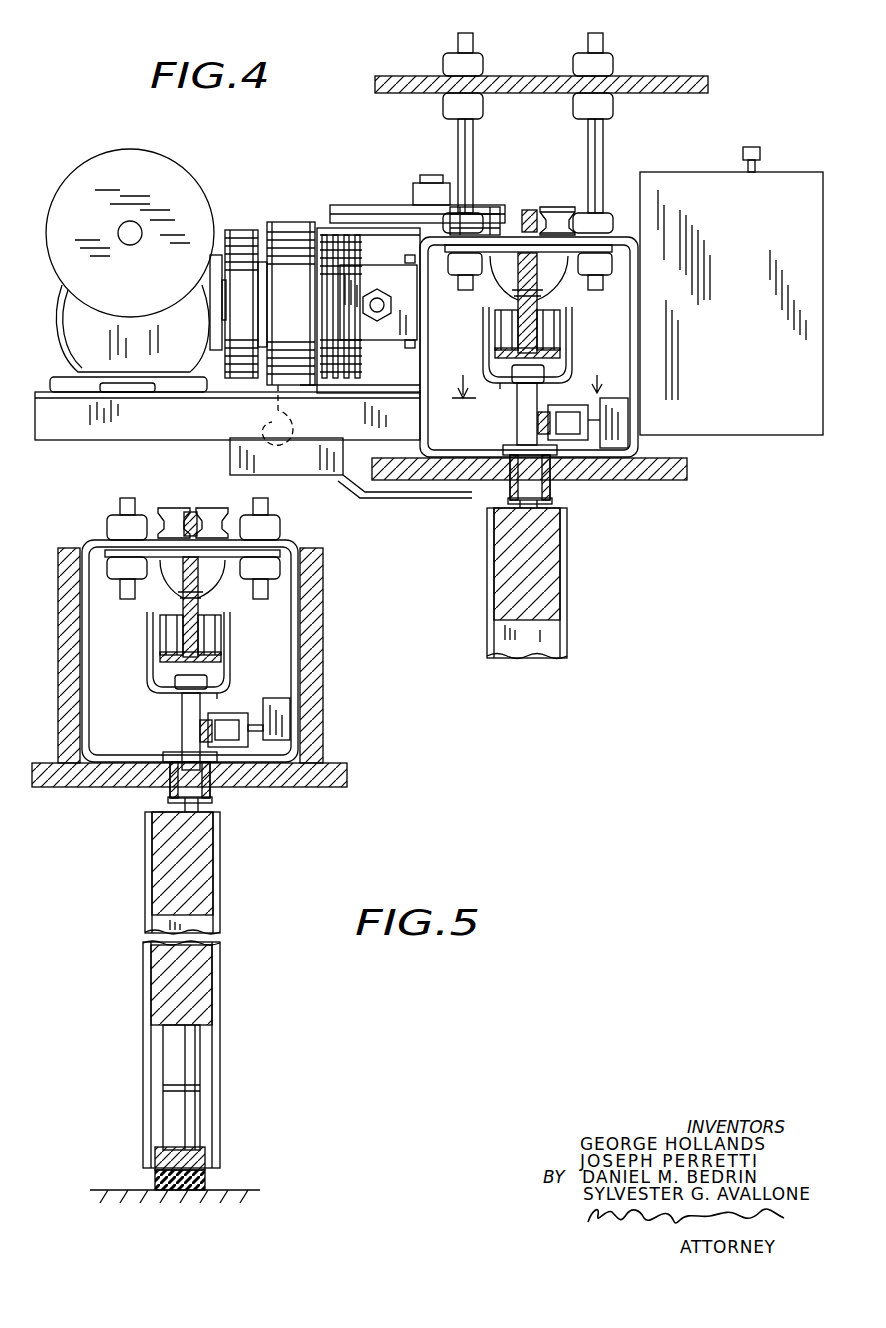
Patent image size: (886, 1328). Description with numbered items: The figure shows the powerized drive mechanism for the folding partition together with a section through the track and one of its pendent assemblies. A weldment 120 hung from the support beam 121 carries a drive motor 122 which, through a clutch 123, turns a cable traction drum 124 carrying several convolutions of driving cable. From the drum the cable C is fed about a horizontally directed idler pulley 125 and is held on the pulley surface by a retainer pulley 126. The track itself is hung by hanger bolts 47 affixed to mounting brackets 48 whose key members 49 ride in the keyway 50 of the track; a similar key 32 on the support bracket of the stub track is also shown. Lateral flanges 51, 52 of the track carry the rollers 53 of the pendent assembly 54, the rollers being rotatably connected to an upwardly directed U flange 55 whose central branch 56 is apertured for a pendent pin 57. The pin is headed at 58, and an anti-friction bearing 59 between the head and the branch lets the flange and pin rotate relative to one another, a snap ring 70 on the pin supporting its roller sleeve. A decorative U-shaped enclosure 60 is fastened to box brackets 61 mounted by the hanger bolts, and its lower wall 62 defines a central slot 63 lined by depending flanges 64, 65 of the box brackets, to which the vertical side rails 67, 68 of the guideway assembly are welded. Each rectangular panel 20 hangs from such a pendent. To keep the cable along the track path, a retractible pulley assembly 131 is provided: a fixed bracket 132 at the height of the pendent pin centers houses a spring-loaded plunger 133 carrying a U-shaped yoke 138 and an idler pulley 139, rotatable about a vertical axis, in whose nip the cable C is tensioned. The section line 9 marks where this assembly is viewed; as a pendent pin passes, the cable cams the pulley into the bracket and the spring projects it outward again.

In FIG. 4, the section line 9— 9 is at (529, 373).
In FIG. 4, the rectangular panel 20 is at (567, 580).
In FIG. 5, the rectangular panel 20 is at (145, 905).
In FIG. 4, the key 32 is at (540, 302).
In FIG. 4, the hanger bolt 47 is at (473, 125).
In FIG. 5, the hanger bolt 47 is at (120, 505).
In FIG. 5, the mounting bracket 48 is at (203, 560).
In FIG. 5, the key member 49 is at (200, 598).
In FIG. 4, the keyway 50 is at (520, 295).
In FIG. 5, the keyway 50 is at (183, 602).
In FIG. 4, the lateral flange 51 is at (544, 374).
In FIG. 5, the lateral flange 51 is at (203, 656).
In FIG. 4, the lateral flange 52 is at (500, 330).
In FIG. 5, the lateral flange 52 is at (162, 658).
In FIG. 4, the roller 53 is at (560, 318).
In FIG. 5, the roller 53 is at (222, 618).
In FIG. 5, the pendent assembly 54 is at (244, 682).
In FIG. 4, the U flange 55 is at (572, 350).
In FIG. 5, the U flange 55 is at (232, 648).
In FIG. 4, the central branch 56 is at (502, 387).
In FIG. 5, the central branch 56 is at (228, 690).
In FIG. 4, the pendent pin 57 is at (517, 425).
In FIG. 5, the pendent pin 57 is at (182, 732).
In FIG. 4, the head 58 is at (515, 368).
In FIG. 5, the head 58 is at (170, 683).
In FIG. 5, the anti-friction bearing 59 is at (185, 682).
In FIG. 5, the decorative U-shaped enclosure 60 is at (318, 624).
In FIG. 4, the box bracket 61 is at (632, 237).
In FIG. 5, the box bracket 61 is at (292, 548).
In FIG. 4, the lower wall 62 is at (688, 470).
In FIG. 5, the lower wall 62 is at (322, 770).
In FIG. 4, the central slot 63 is at (498, 496).
In FIG. 5, the central slot 63 is at (159, 797).
In FIG. 4, the depending flange 64 is at (480, 490).
In FIG. 5, the depending flange 64 is at (163, 775).
In FIG. 4, the depending flange 65 is at (557, 476).
In FIG. 5, the depending flange 65 is at (217, 778).
In FIG. 5, the side rail 67 is at (160, 815).
In FIG. 4, the side rail 68 is at (560, 500).
In FIG. 5, the side rail 68 is at (200, 800).
In FIG. 5, the snap ring 70 is at (152, 864).
In FIG. 4, the weldment 120 is at (68, 440).
In FIG. 4, the support beam 121 is at (538, 94).
In FIG. 4, the drive motor 122 is at (70, 350).
In FIG. 4, the clutch 123 is at (245, 228).
In FIG. 4, the cable traction drum 124 is at (320, 232).
In FIG. 4, the idler pulley 125 is at (505, 207).
In FIG. 4, the retainer pulley 126 is at (555, 206).
In FIG. 4, the retractible pulley assembly 131 is at (605, 446).
In FIG. 5, the retractible pulley assembly 131 is at (258, 720).
In FIG. 4, the fixed bracket 132 is at (638, 445).
In FIG. 4, the plunger 133 is at (598, 460).
In FIG. 5, the plunger 133 is at (266, 725).
In FIG. 4, the U-shaped yoke 138 is at (600, 410).
In FIG. 4, the idler pulley 139 is at (548, 418).
In FIG. 4, the cable C is at (530, 208).
In FIG. 5, the cable C is at (245, 738).